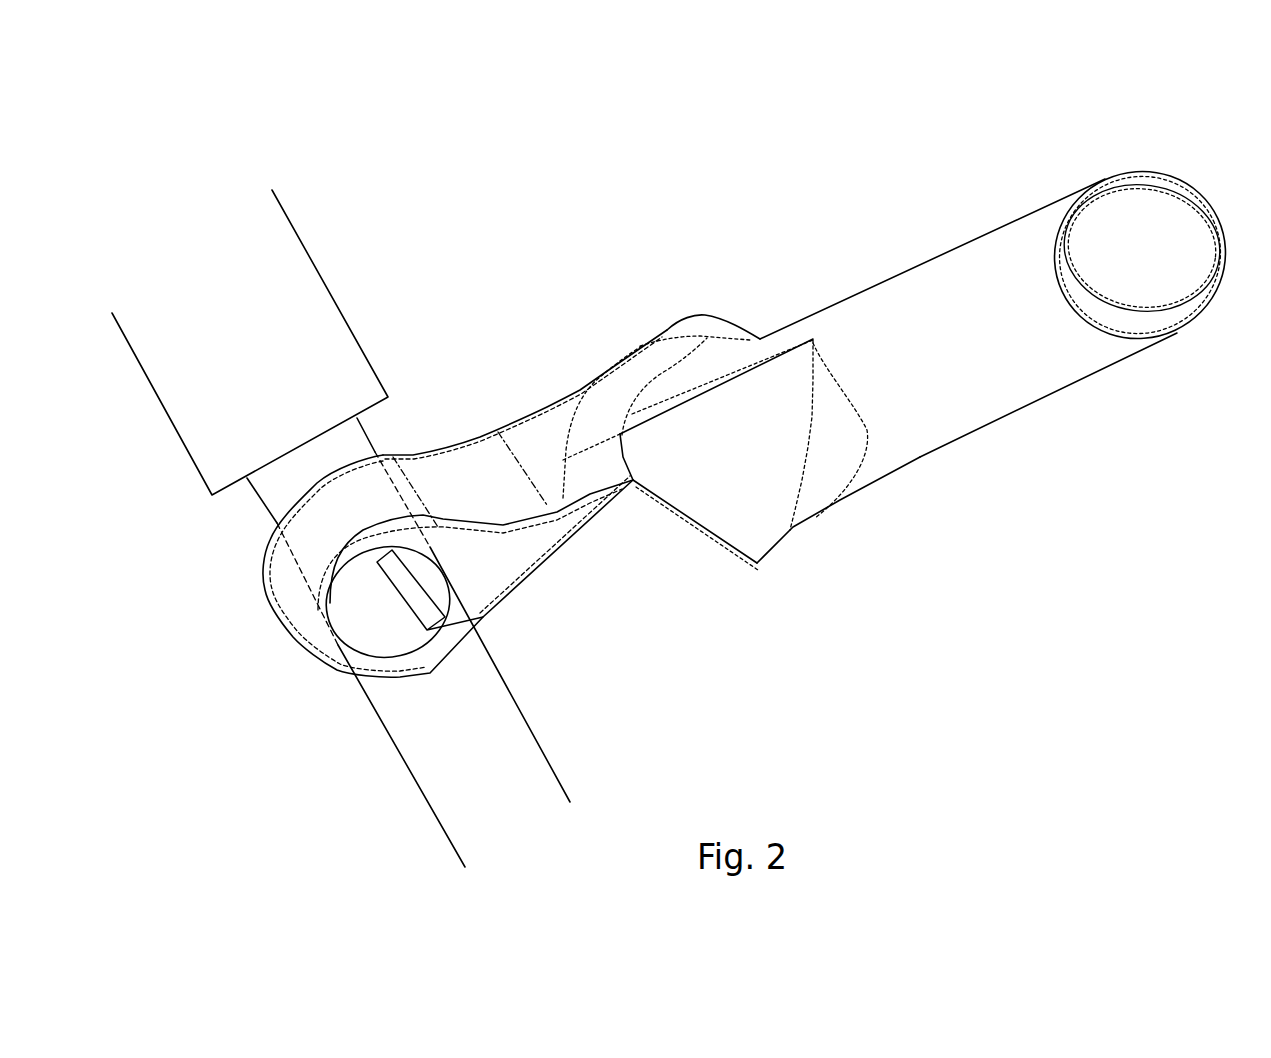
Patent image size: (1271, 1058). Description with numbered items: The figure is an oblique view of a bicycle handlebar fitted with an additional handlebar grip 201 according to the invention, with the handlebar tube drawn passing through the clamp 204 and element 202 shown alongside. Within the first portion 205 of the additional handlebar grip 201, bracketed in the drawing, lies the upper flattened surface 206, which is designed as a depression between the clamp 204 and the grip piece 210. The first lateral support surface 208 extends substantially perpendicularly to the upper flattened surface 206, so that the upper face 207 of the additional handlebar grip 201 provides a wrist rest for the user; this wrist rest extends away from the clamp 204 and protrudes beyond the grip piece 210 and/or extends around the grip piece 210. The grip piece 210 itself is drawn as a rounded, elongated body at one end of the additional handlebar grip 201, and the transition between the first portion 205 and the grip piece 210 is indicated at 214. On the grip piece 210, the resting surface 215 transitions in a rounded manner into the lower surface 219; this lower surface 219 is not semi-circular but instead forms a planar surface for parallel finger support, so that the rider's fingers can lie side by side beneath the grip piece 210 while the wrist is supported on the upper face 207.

The additional handlebar grip 201 is at (1006, 266).
The plate 202 is at (188, 457).
The clamp 204 is at (322, 672).
The first portion 205 is at (607, 150).
The upper flattened surface 206 is at (525, 432).
The upper face 207 is at (690, 175).
The first lateral support surface 208 is at (512, 563).
The grip piece 210 is at (1133, 360).
The saddle portion 214 is at (680, 383).
The resting surface 215 is at (707, 493).
The lower surface 219 is at (778, 530).